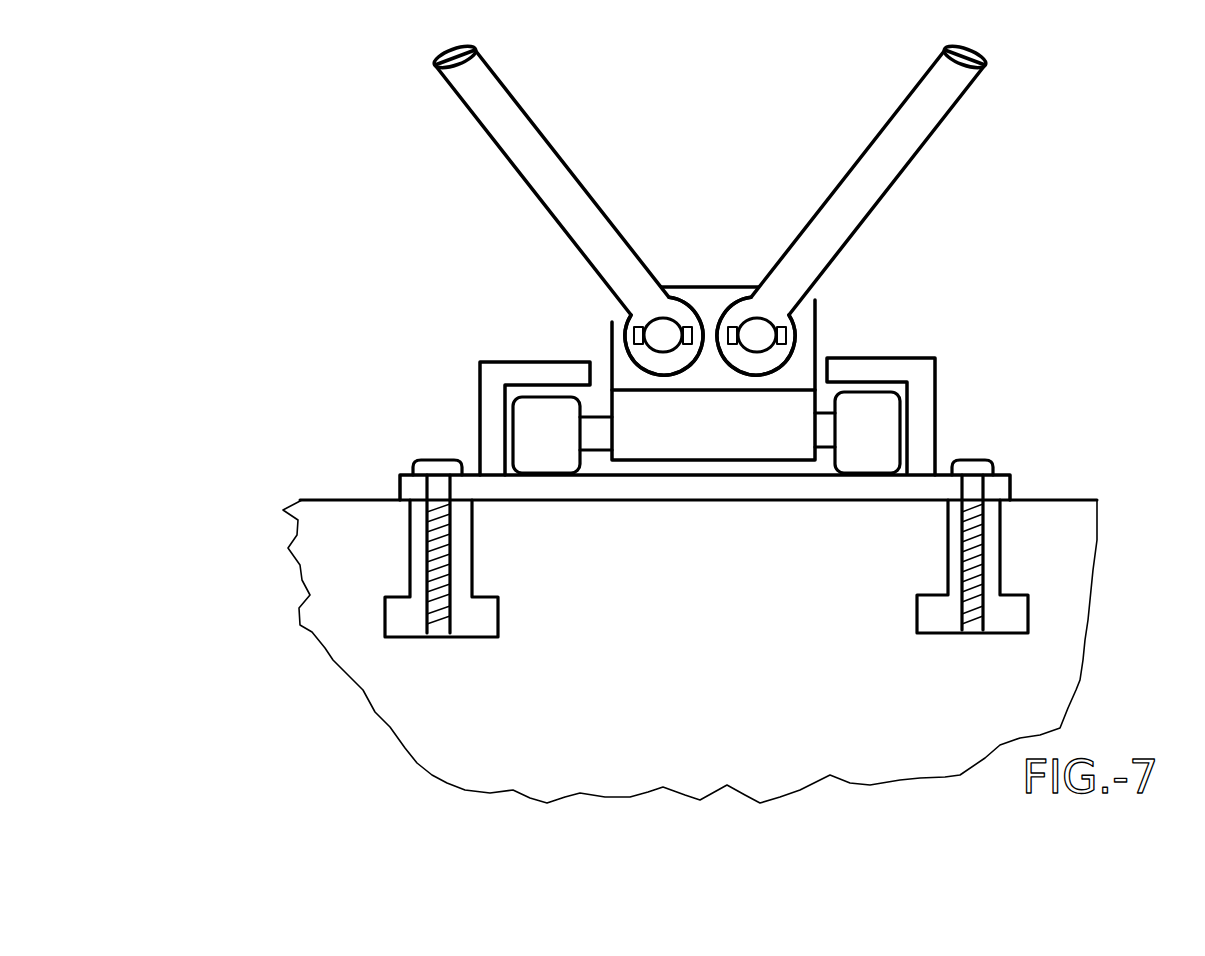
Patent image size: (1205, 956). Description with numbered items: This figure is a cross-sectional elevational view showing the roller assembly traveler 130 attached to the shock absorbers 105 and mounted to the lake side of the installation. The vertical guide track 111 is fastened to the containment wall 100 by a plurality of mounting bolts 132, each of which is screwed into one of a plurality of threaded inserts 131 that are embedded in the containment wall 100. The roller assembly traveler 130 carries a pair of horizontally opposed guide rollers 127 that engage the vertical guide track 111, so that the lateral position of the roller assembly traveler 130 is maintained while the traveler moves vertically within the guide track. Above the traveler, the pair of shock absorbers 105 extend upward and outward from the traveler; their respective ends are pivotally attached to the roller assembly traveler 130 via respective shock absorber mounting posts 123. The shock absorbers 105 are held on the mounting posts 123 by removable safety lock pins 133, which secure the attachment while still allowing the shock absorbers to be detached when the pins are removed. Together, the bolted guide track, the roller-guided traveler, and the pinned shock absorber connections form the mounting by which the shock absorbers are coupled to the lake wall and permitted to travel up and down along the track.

The containment wall 100 is at (520, 718).
The shock absorbers 105 is at (885, 163).
The vertical guide track 111 is at (518, 372).
The shock absorber mounting posts 123 is at (757, 335).
The guide rollers 127 is at (528, 428).
The roller assembly traveler 130 is at (813, 350).
The threaded inserts 131 is at (417, 557).
The mounting bolts 132 is at (412, 462).
The removable safety lock pins 133 is at (620, 322).